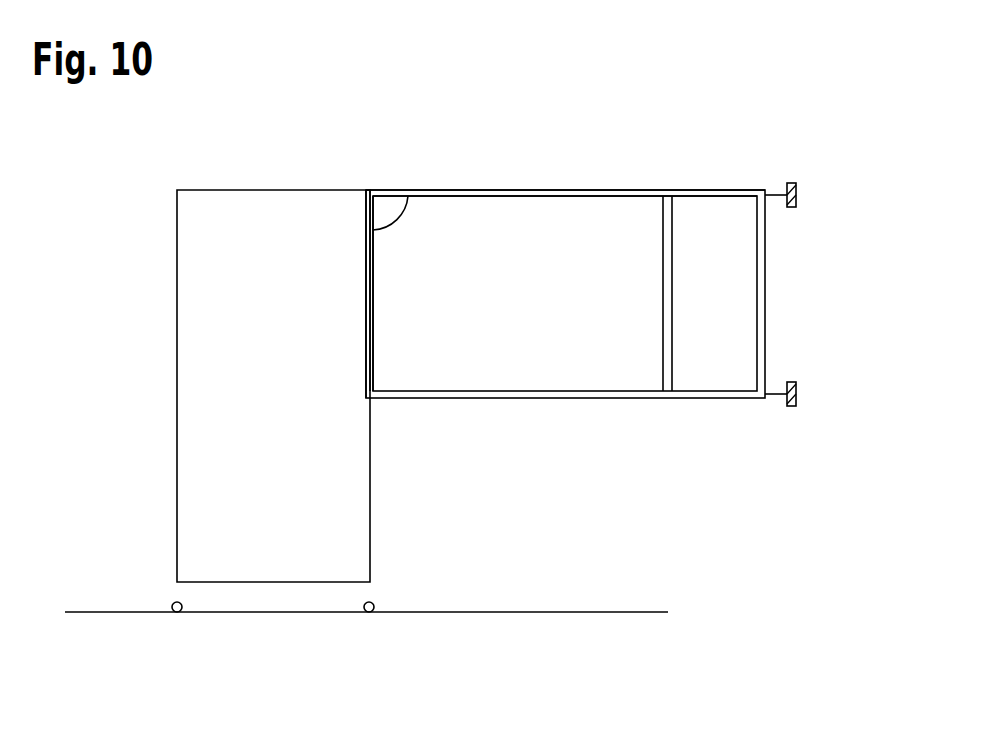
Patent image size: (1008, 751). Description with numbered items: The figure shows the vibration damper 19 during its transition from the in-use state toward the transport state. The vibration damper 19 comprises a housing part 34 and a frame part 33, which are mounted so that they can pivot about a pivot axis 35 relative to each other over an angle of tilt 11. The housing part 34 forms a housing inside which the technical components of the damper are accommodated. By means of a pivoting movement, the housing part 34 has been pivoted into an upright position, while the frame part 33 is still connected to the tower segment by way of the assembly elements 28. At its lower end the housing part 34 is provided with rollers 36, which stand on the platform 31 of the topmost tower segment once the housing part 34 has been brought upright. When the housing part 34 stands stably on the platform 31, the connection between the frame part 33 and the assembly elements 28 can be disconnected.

The angle of tilt 11 is at (387, 212).
The vibration damper 19 is at (508, 138).
The assembly elements 28 is at (797, 186).
The platform 31 is at (583, 611).
The frame part 33 is at (622, 190).
The housing part 34 is at (274, 190).
The pivot axis 35 is at (368, 190).
The rollers 36 is at (172, 604).